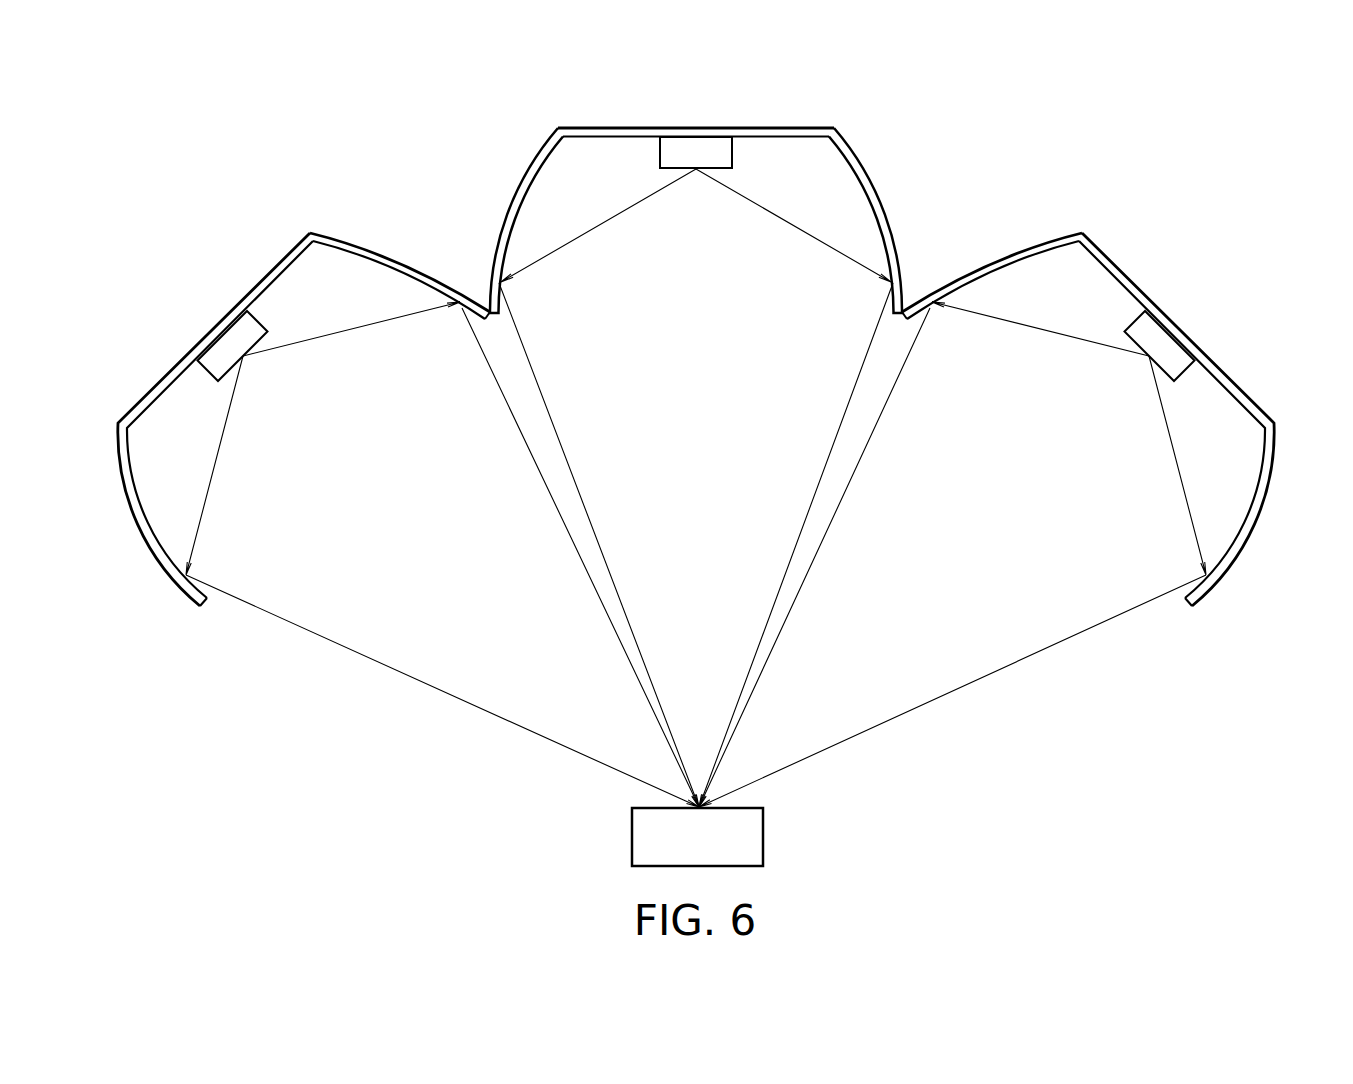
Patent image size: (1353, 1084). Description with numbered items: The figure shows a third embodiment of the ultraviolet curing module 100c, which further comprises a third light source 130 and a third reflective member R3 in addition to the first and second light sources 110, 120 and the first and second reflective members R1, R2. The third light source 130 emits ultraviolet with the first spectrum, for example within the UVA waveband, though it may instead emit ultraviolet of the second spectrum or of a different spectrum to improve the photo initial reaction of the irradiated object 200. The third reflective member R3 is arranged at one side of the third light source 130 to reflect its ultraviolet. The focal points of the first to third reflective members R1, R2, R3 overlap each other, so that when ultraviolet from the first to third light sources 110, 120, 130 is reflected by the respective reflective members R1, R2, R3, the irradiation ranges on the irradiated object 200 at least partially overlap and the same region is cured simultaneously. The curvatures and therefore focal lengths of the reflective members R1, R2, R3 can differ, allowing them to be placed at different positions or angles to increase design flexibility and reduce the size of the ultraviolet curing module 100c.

The ultraviolet curing module 100c is at (701, 355).
The first light source 110 is at (232, 342).
The second light source 120 is at (696, 153).
The third light source 130 is at (1163, 343).
The irradiated object 200 is at (697, 837).
The first reflective member R1 is at (357, 242).
The second reflective member R2 is at (858, 170).
The third reflective member R3 is at (1033, 242).